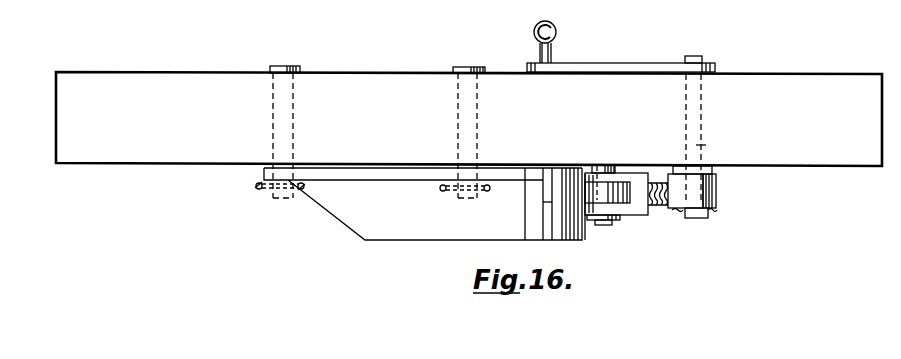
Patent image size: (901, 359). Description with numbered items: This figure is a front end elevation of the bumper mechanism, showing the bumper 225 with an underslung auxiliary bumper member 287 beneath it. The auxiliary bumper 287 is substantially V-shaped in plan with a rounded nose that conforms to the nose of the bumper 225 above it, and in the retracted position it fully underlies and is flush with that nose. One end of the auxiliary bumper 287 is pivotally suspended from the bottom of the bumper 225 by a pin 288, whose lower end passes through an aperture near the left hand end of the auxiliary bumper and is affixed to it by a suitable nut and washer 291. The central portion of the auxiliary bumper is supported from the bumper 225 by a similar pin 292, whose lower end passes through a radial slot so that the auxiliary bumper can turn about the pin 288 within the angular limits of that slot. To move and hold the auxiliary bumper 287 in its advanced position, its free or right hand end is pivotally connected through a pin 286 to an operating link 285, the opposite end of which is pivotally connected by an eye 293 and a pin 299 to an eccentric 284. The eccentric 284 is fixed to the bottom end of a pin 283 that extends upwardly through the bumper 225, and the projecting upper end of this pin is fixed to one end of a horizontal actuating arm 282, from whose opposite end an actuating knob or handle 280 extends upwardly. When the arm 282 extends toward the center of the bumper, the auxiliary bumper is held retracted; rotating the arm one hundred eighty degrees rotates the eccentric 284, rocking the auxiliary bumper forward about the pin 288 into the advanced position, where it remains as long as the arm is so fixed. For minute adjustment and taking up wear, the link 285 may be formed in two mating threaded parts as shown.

The bumper 225 is at (818, 160).
The actuating knob 280 is at (538, 26).
The horizontal actuating arm 282 is at (616, 63).
The pin 283 is at (693, 56).
The eccentric 284 is at (716, 178).
The operating link 285 is at (648, 208).
The pin 286 is at (608, 224).
The auxiliary bumper member 287 is at (426, 240).
The pin 288 is at (293, 92).
The nut and washer 291 is at (268, 192).
The pin 292 is at (458, 88).
The eye 293 is at (715, 197).
The pin 299 is at (705, 217).